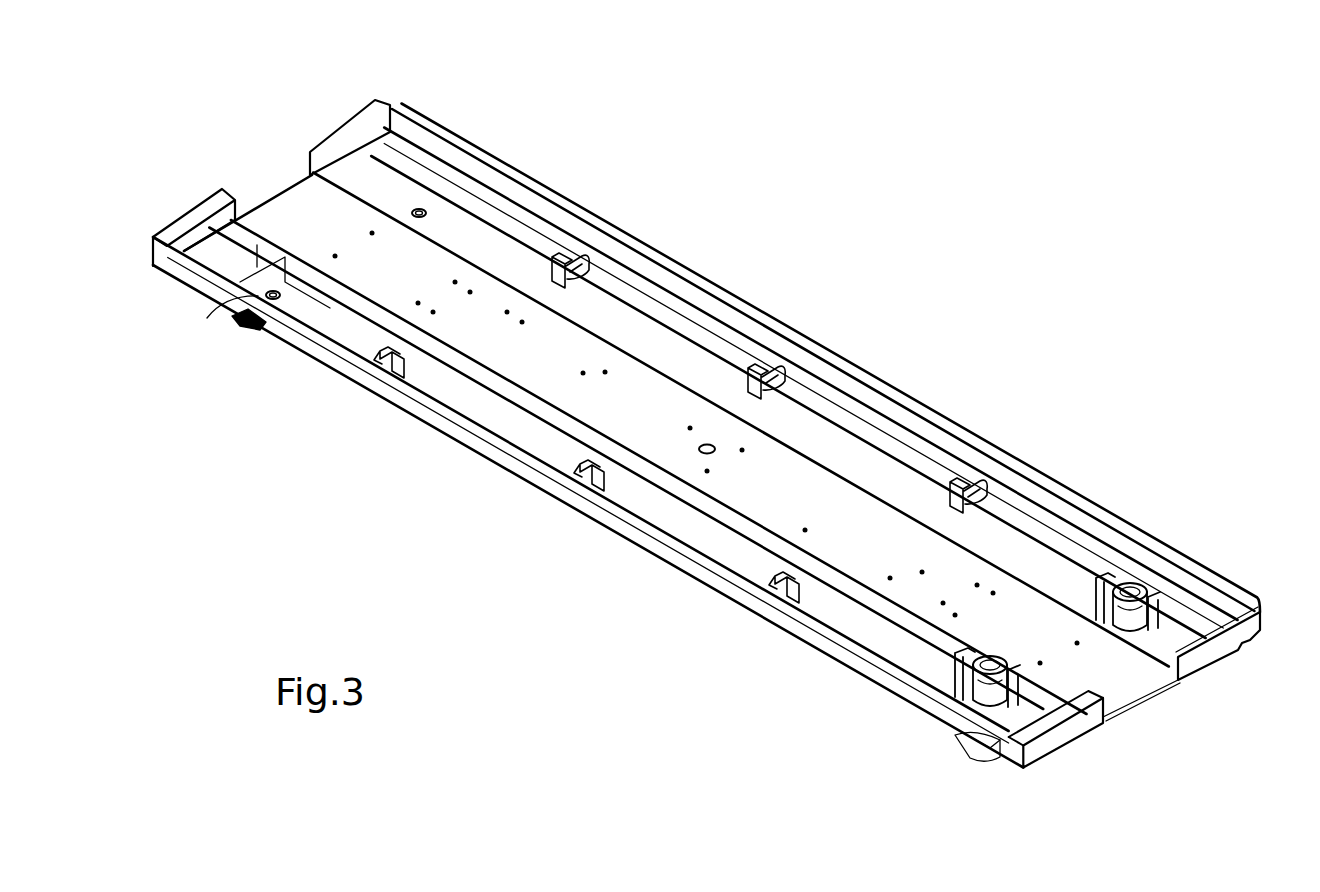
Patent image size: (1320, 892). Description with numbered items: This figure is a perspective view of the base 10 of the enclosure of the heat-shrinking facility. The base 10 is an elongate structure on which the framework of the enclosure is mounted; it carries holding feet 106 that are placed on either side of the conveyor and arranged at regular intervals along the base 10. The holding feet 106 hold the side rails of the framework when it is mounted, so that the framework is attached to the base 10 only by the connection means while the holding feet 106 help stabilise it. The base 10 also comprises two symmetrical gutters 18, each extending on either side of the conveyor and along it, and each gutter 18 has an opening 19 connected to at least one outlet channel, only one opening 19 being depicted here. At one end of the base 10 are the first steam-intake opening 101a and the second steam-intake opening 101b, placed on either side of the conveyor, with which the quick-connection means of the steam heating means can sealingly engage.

The base 10 is at (455, 432).
The gutter 18 is at (677, 358).
The opening 19 is at (427, 208).
The holding feet 106 is at (585, 243).
The first steam-intake opening 101a is at (975, 678).
The second steam-intake opening 101b is at (1147, 580).